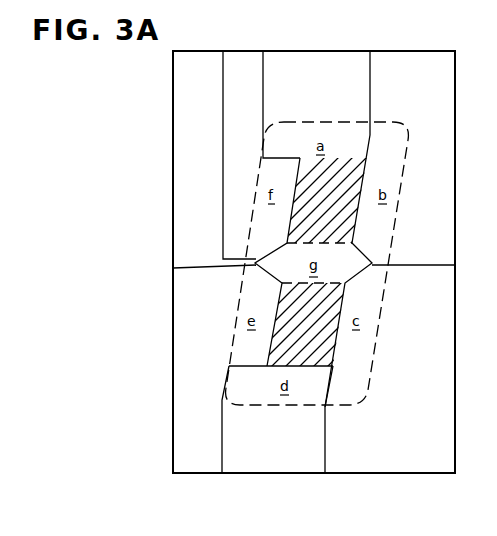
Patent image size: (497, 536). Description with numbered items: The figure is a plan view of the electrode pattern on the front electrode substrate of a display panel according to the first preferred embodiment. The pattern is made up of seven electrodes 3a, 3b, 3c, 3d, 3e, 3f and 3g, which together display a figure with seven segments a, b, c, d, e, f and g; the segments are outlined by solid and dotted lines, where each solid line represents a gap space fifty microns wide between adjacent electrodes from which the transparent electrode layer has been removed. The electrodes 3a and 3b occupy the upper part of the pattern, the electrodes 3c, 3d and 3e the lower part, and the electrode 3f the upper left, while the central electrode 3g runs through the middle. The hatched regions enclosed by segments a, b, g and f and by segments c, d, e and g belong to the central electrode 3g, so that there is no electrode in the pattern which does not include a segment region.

The electrode 3a is at (308, 51).
The electrode 3b is at (412, 55).
The electrode 3c is at (372, 473).
The electrode 3d is at (258, 473).
The electrode 3e is at (200, 473).
The electrode 3f is at (237, 51).
The central electrode 3g is at (176, 124).